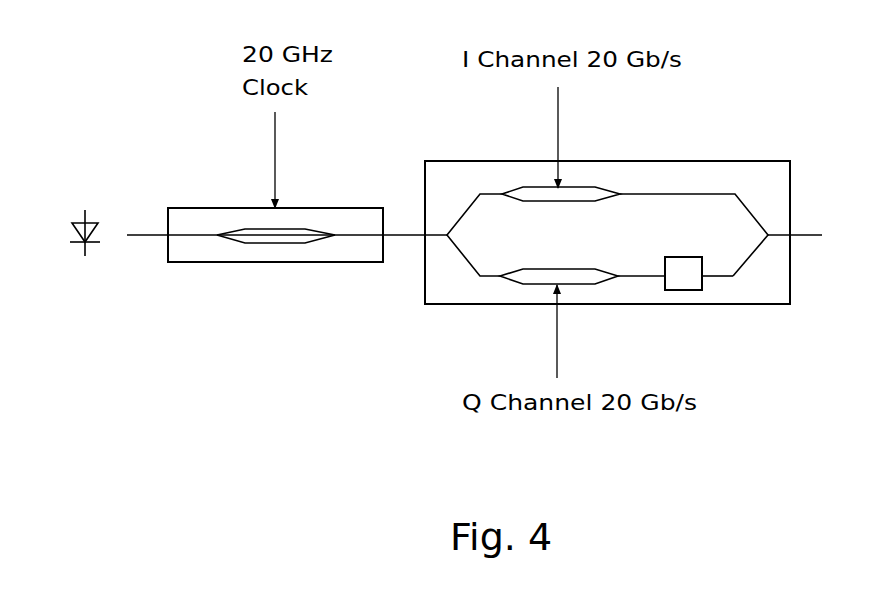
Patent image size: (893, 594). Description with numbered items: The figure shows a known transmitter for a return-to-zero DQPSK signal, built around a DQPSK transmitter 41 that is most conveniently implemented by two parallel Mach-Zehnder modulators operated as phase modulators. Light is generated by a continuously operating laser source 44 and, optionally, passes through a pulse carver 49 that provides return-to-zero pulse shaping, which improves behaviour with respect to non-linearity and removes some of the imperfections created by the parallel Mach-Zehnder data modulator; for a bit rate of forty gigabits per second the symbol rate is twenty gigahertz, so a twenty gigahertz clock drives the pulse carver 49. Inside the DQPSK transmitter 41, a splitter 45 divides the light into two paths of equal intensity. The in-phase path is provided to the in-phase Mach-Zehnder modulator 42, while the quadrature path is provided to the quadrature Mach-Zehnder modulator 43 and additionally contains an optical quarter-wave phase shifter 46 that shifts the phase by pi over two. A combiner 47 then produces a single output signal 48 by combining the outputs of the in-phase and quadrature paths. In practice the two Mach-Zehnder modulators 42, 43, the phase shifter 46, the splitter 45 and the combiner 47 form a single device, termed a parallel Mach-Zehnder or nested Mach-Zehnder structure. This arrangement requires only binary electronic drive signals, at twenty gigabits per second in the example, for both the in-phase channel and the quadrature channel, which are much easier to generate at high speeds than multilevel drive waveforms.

The DQPSK transmitter 41 is at (706, 157).
The in-phase Mach-Zehnder modulator 42 is at (597, 187).
The quadrature Mach-Zehnder modulator 43 is at (585, 285).
The laser source 44 is at (75, 222).
The splitter 45 is at (445, 238).
The optical π/2-phase shifter 46 is at (683, 290).
The combiner 47 is at (769, 238).
The output signal 48 is at (807, 234).
The pulse carver 49 is at (277, 246).